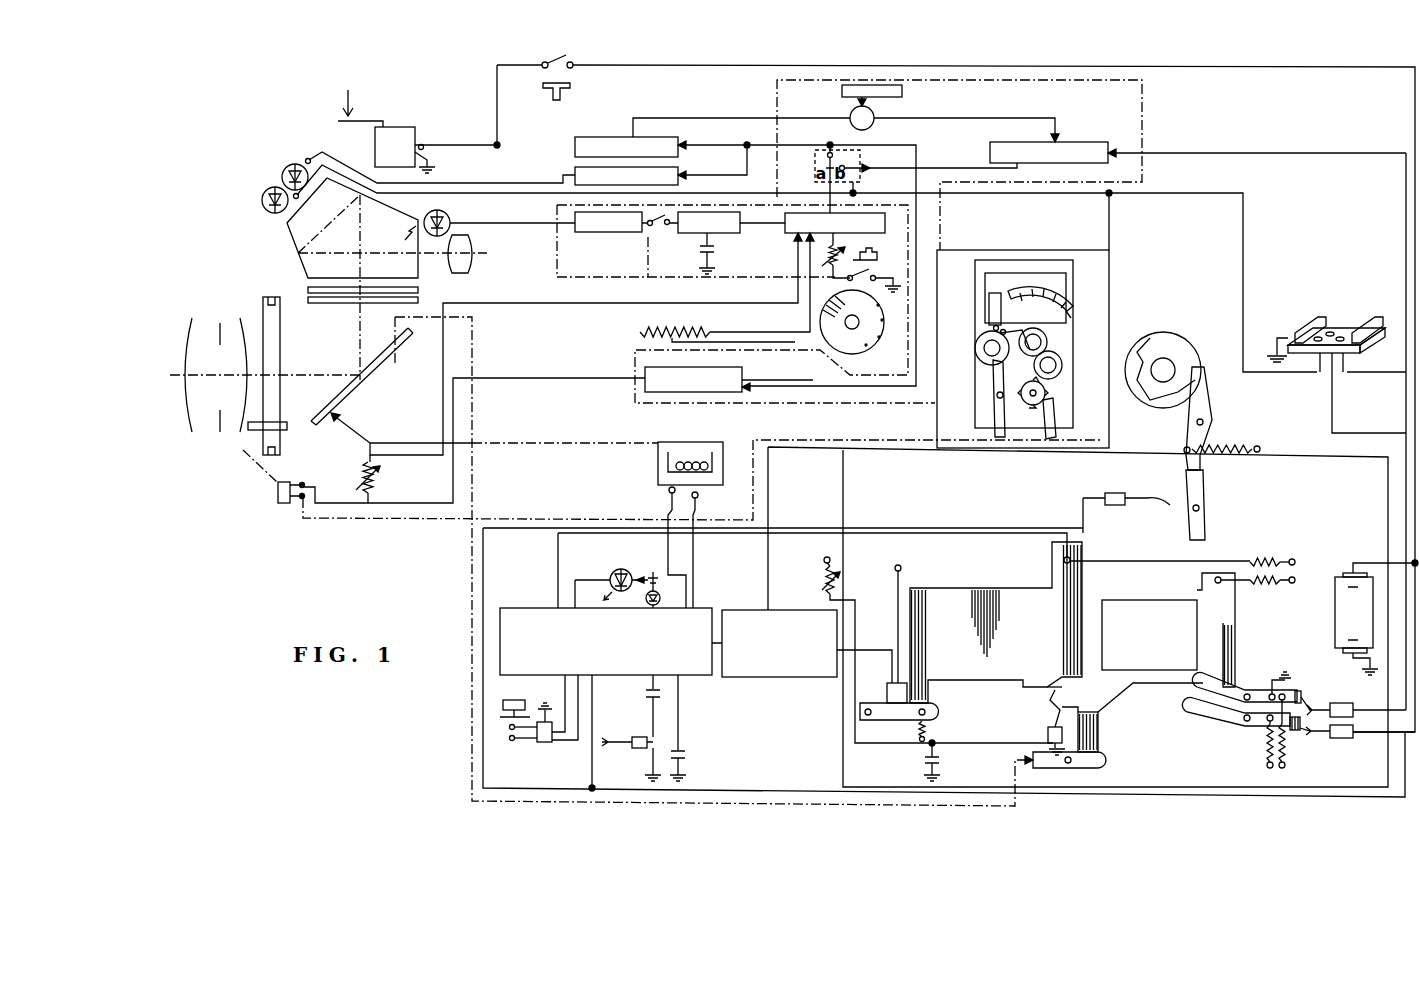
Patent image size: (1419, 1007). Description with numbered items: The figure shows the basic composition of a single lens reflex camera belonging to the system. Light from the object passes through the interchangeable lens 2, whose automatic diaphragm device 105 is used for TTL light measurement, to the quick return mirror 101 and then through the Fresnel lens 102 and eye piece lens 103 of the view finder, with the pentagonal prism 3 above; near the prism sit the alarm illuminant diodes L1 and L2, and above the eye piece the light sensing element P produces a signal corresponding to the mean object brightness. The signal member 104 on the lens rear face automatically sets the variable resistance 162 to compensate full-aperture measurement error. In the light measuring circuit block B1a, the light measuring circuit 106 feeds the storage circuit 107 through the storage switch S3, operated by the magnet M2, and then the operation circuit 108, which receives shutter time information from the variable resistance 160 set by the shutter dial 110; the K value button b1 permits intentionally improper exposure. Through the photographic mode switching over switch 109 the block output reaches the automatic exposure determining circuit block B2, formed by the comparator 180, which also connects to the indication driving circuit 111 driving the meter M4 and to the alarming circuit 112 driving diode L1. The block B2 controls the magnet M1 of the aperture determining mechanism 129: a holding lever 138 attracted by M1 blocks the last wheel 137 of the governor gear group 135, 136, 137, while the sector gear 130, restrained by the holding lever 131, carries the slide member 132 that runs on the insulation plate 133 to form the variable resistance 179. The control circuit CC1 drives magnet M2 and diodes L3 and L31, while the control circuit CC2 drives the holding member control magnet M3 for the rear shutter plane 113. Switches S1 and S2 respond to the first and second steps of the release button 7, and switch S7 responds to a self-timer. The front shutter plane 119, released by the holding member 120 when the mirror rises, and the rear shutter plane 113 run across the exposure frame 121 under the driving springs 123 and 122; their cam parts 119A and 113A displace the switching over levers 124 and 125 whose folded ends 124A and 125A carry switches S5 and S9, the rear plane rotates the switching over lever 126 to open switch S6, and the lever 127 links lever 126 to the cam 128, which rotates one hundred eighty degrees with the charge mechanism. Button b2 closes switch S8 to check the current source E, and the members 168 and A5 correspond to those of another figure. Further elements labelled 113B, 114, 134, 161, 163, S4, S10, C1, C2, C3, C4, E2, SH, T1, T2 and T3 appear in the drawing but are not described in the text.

The interchangeable lens 2 is at (199, 420).
The prism 3 is at (297, 228).
The shutter release button 7 is at (510, 700).
The quick return mirror 101 is at (672, 561).
The Fresnel lens 102 is at (338, 297).
The eye piece lens 103 is at (470, 266).
The signal member 104 is at (253, 432).
The automatic diaphragm device 105 is at (220, 322).
The light measuring circuit 106 is at (608, 222).
The storage circuit 107 is at (709, 222).
The operation circuit 108 is at (835, 223).
The photographic mode switching over switch 109 is at (871, 125).
The shutter dial 110 is at (862, 329).
The indication driving circuit 111 is at (605, 145).
The alarming circuit 112 is at (575, 176).
The rear shutter plane 113 is at (975, 592).
The cam part of the rear shutter plane 113A is at (1058, 684).
The contact 113B is at (1072, 558).
The lever 114 is at (900, 720).
The front shutter plane 119 is at (1122, 705).
The cam part of the front shutter plane 119A is at (1130, 692).
The front shutter plane holding member 120 is at (1108, 760).
The exposure frame 121 is at (1149, 635).
The rear shutter plane driving spring 122 is at (1265, 558).
The front shutter plane driving spring 123 is at (1265, 585).
The switching over lever 124 is at (1212, 719).
The folded end of lever 124 124A is at (1297, 731).
The switching over lever 125 is at (1238, 684).
The folded end of lever 125 125A is at (1302, 694).
The switching over lever 126 is at (1205, 525).
The lever 127 is at (1207, 395).
The cam 128 is at (1200, 356).
The aperture determining mechanism 129 is at (997, 265).
The sector gear 130 is at (975, 350).
The holding lever 131 is at (995, 415).
The slide member 132 is at (988, 306).
The insulation plate 133 is at (1066, 285).
The sector 134 is at (1035, 292).
The step up gear 135 is at (1047, 342).
The step up gear 136 is at (1062, 365).
The last wheel 137 is at (1045, 393).
The holding lever 138 is at (1055, 418).
The variable resistance 160 is at (717, 323).
The variable resistor 161 is at (824, 580).
The variable resistance 162 is at (374, 478).
The variable resistor 163 is at (825, 256).
The member 168 is at (902, 92).
The variable resistance 179 is at (1068, 316).
The comparator 180 is at (742, 370).
The illuminant diode L1 is at (286, 172).
The illuminant diode L2 is at (265, 198).
The illuminating diode L3 is at (611, 578).
The illuminating diode L31 is at (668, 599).
The light sensing element P is at (490, 221).
The magnet M1 is at (286, 505).
The camera actuating magnet M2 is at (658, 462).
The holding member control magnet M3 is at (886, 624).
The meter M4 is at (405, 150).
The switch S1 is at (508, 726).
The switch S2 is at (508, 740).
The storage switch S3 is at (660, 246).
The switch S4 is at (1048, 735).
The switch S5 is at (1340, 738).
The switch S6 is at (1113, 493).
The switch S7 is at (633, 748).
The switch S8 is at (557, 54).
The switch S9 is at (1345, 704).
The switch S10 is at (879, 274).
The capacitor C1 is at (944, 762).
The capacitor C2 is at (642, 706).
The capacitor C3 is at (690, 728).
The capacitor C4 is at (718, 253).
The light measuring circuit block B1a is at (558, 252).
The automatic exposure determining circuit block B2 is at (1142, 103).
The member A5 is at (1060, 150).
The current source E is at (645, 574).
The battery E2 is at (1326, 606).
The shoe SH is at (1340, 303).
The terminal T1 is at (1346, 376).
The terminal T2 is at (1317, 376).
The terminal T3 is at (1358, 393).
The control circuit CC1 is at (606, 641).
The control circuit CC2 is at (779, 643).
The K value button b1 is at (873, 248).
The button b2 is at (557, 102).